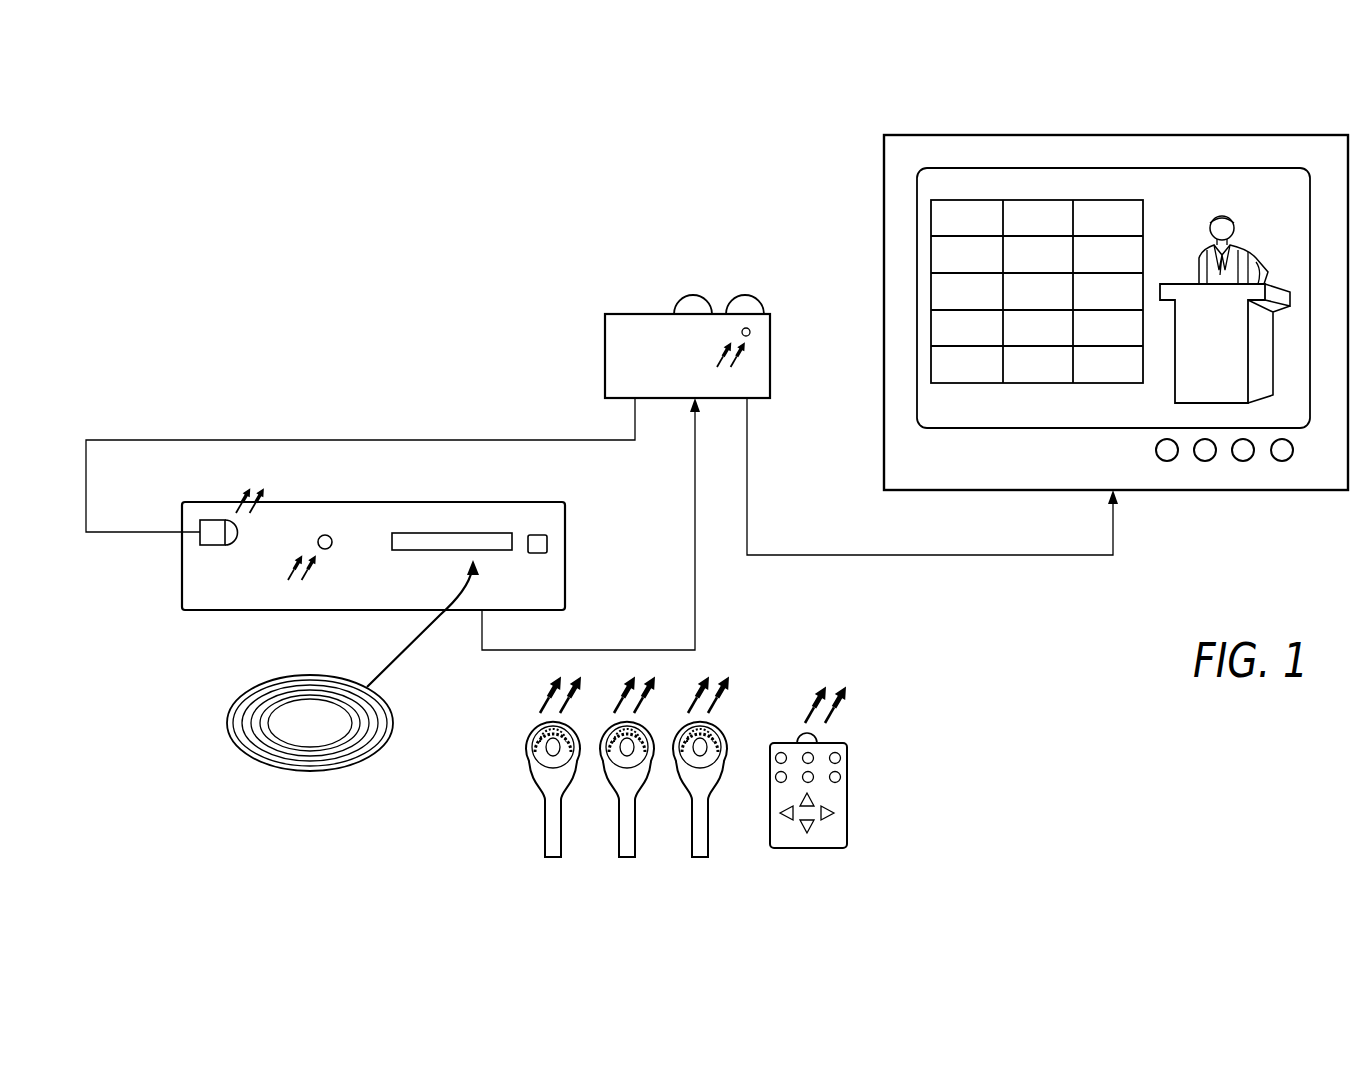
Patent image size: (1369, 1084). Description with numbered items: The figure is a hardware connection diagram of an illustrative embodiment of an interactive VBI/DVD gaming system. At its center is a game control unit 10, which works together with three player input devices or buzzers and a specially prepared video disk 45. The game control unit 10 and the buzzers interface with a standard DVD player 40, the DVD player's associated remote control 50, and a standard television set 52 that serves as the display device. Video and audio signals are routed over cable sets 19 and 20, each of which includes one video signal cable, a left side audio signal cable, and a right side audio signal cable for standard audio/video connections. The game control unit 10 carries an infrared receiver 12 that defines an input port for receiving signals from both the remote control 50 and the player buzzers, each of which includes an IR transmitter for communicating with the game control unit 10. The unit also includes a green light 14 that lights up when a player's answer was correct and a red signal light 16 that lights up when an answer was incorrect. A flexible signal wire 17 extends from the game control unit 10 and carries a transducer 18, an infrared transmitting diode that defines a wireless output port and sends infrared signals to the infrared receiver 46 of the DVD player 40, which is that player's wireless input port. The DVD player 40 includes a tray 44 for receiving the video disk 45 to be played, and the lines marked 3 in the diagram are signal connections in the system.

The television set 52 is at (1014, 135).
The game control unit 10 is at (592, 292).
The green light 14 is at (693, 295).
The red signal light 16 is at (745, 295).
The infrared receiver 12 is at (750, 332).
The flexible signal wire 17 is at (86, 440).
The DVD player 40 is at (603, 504).
The transducer 18 is at (198, 538).
The infrared receiver of DVD player 46 is at (325, 549).
The tray 44 is at (456, 552).
The video disk 45 is at (322, 770).
The cable set 19 is at (695, 616).
The cable set 20 is at (870, 555).
The cable 3 is at (803, 567).
The remote control 50 is at (847, 787).